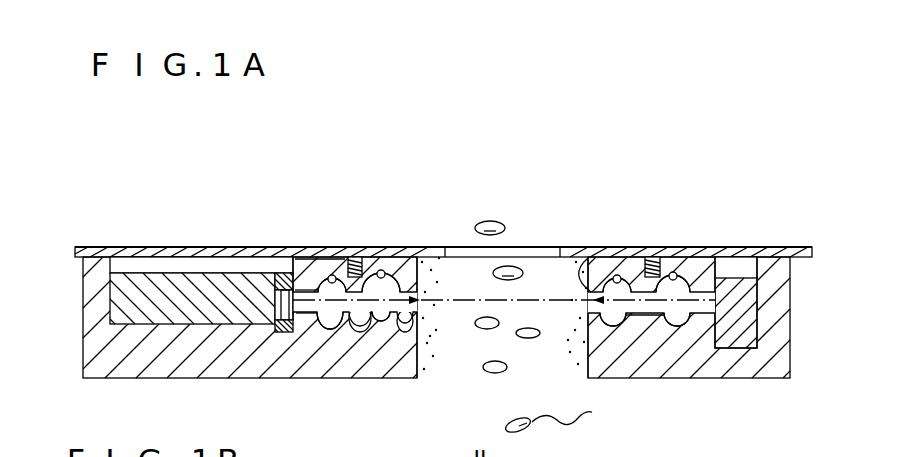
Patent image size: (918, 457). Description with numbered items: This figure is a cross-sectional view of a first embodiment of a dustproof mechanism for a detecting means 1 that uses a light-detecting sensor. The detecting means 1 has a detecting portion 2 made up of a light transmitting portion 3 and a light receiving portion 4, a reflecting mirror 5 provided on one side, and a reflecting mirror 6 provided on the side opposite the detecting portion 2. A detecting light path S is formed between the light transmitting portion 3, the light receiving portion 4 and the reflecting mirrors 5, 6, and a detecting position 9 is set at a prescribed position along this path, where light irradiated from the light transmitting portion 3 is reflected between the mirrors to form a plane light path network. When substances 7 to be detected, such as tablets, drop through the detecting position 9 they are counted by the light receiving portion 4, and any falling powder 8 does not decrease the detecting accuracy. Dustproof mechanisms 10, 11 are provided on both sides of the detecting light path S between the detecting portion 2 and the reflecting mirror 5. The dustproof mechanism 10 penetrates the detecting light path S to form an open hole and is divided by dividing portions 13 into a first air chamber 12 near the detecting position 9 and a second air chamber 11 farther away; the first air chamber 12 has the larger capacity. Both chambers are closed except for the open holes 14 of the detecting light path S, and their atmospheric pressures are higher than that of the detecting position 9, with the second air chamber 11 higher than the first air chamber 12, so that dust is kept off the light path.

The detecting means 1 is at (150, 240).
The detecting portion 2 is at (200, 282).
The light transmitting portion 3 is at (283, 330).
The light receiving portion 4 is at (280, 270).
The reflecting mirror 5 is at (305, 314).
The reflecting mirror 6 is at (745, 260).
The substances to be detected 7 is at (557, 419).
The powder 8 is at (433, 362).
The detecting position 9 is at (548, 243).
The dustproof mechanism 10 is at (300, 268).
The second air chamber 11 is at (318, 262).
The first air chamber 12 is at (395, 262).
The dividing portion 13 is at (365, 333).
The open hole 14 is at (577, 275).
The detecting light path S is at (448, 378).